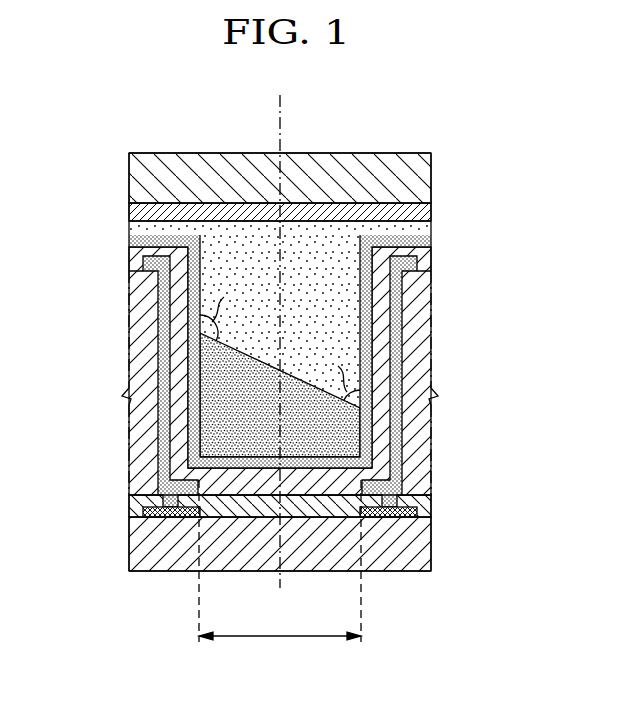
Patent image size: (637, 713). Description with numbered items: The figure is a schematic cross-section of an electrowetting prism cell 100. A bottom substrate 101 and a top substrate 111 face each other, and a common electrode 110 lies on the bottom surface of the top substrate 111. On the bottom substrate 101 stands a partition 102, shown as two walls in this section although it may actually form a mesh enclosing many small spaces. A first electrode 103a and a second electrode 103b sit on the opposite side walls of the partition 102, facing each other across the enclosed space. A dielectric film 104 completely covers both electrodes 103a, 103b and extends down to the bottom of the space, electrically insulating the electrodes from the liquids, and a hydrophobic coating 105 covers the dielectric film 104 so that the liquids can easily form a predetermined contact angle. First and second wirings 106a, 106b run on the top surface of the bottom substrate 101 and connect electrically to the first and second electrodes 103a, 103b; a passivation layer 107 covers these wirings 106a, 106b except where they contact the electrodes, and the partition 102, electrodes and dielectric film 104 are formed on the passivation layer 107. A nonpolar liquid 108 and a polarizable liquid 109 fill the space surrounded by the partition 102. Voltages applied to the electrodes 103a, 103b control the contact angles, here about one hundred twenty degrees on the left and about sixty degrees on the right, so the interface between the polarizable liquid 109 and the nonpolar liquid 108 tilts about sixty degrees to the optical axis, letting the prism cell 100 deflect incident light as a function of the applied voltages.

The electrowetting prism cell 100 is at (438, 96).
The bottom substrate 101 is at (422, 543).
The partition 102 is at (133, 315).
The first electrode 103a is at (163, 256).
The second electrode 103b is at (400, 256).
The dielectric film 104 is at (433, 249).
The hydrophobic coating 105 is at (365, 352).
The first wiring 106a is at (163, 517).
The second wiring 106b is at (392, 517).
The passivation layer 107 is at (422, 503).
The nonpolar liquid 108 is at (305, 440).
The polarizable liquid 109 is at (316, 252).
The common electrode 110 is at (432, 212).
The top substrate 111 is at (432, 176).